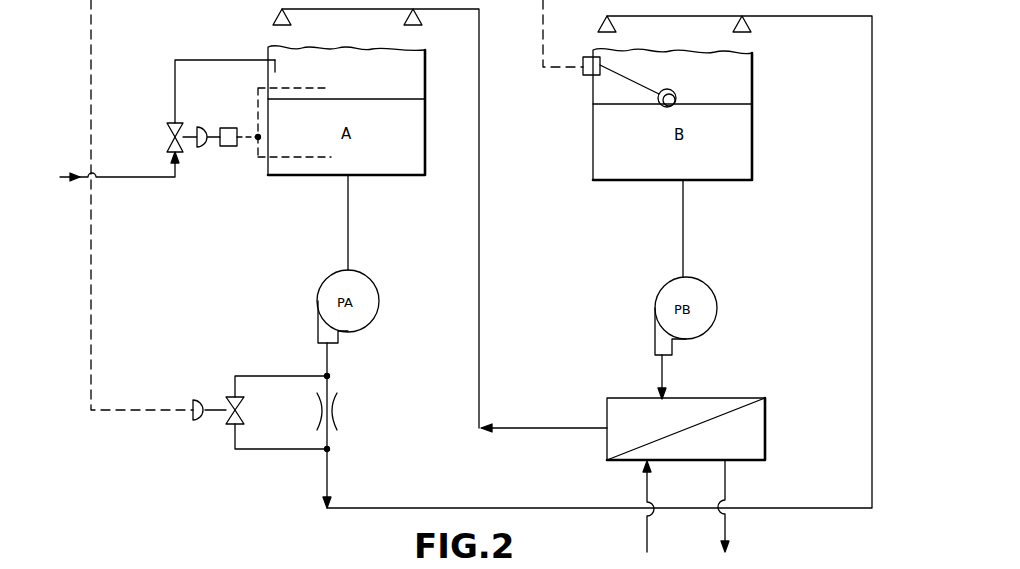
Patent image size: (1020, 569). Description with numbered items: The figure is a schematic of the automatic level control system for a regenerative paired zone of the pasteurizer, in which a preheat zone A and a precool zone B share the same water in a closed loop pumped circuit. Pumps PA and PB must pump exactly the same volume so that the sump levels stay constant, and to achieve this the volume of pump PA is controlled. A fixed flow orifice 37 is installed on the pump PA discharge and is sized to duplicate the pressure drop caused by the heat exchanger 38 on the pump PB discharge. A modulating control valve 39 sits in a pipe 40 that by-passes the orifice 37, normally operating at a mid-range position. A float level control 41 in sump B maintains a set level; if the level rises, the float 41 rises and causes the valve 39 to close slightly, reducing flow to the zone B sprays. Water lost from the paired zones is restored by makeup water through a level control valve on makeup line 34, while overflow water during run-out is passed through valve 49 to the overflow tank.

The makeup line 34 is at (146, 178).
The valve 49 is at (207, 149).
The float level control 41 is at (665, 110).
The pipe 40 is at (290, 376).
The modulating control valve 39 is at (201, 400).
The fixed flow orifice 37 is at (338, 412).
The heat exchanger 38 is at (746, 398).